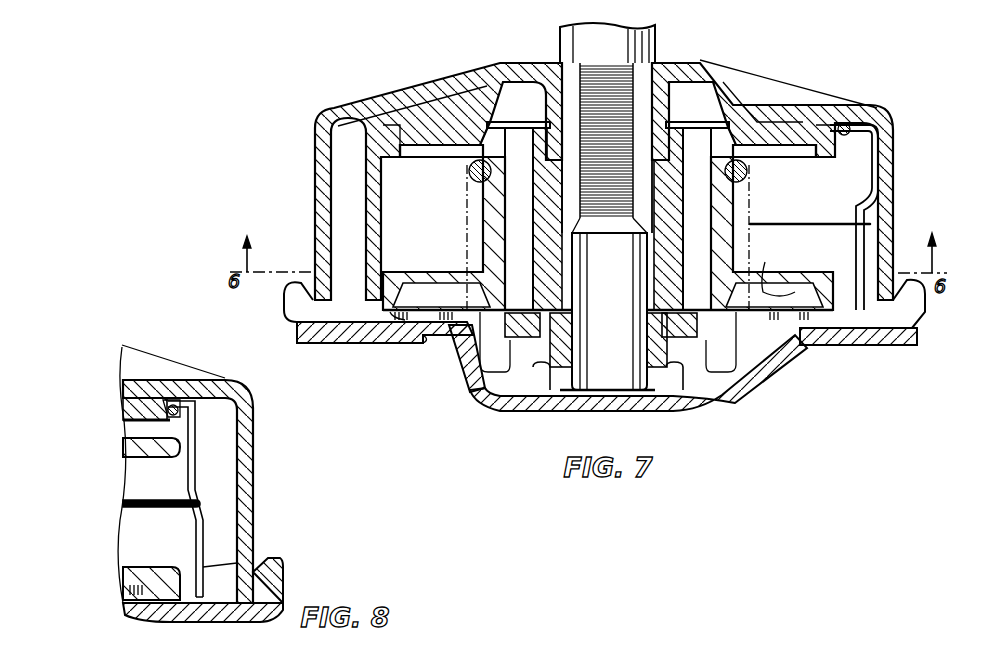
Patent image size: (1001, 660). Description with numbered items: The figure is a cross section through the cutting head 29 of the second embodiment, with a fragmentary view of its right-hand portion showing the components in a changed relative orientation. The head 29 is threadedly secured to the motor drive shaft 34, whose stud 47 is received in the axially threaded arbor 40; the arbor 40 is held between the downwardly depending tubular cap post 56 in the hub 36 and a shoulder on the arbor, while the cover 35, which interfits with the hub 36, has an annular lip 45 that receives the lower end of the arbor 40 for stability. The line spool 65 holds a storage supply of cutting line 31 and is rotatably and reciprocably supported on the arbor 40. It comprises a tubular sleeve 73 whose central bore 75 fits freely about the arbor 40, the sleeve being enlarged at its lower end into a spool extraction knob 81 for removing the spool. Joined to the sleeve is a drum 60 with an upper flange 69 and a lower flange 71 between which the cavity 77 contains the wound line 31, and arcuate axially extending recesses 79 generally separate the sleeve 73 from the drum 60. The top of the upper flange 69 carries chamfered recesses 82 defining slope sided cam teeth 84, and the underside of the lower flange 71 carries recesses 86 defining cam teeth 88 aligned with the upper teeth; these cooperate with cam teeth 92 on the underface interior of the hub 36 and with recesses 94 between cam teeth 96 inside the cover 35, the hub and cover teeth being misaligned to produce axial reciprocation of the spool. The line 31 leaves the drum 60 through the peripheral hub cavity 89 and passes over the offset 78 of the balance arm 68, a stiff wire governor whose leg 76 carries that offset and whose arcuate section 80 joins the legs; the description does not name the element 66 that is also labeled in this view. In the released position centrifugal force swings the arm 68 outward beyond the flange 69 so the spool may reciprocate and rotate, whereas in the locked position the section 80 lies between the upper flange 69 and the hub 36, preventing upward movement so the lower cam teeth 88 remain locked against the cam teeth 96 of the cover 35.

In FIG. 7, the head 29 is at (308, 150).
In FIG. 8, the head 29 is at (282, 513).
In FIG. 7, the cutting line 31 is at (468, 172).
In FIG. 8, the cutting line 31 is at (200, 507).
In FIG. 7, the motor drive shaft 34 is at (653, 43).
In FIG. 7, the cover 35 is at (363, 347).
In FIG. 8, the cover 35 is at (253, 613).
In FIG. 7, the hub 36 is at (477, 83).
In FIG. 8, the hub 36 is at (167, 383).
In FIG. 7, the arbor 40 is at (566, 248).
In FIG. 7, the annular lip 45 is at (690, 413).
In FIG. 7, the stud 47 is at (632, 55).
In FIG. 7, the tubular cap post 56 is at (553, 60).
In FIG. 7, the drum 60 is at (720, 220).
In FIG. 7, the line spool 65 is at (417, 262).
In FIG. 8, the line spool 65 is at (142, 463).
In FIG. 7, the sloping top wall 66 is at (691, 113).
In FIG. 7, the balance arm 68 is at (858, 173).
In FIG. 8, the balance arm 68 is at (230, 438).
In FIG. 7, the upper flange 69 is at (413, 158).
In FIG. 8, the upper flange 69 is at (150, 470).
In FIG. 7, the lower flange 71 is at (440, 272).
In FIG. 8, the lower flange 71 is at (143, 570).
In FIG. 7, the tubular sleeve 73 is at (580, 287).
In FIG. 7, the central bore 75 is at (645, 285).
In FIG. 7, the leg 76 is at (870, 155).
In FIG. 8, the leg 76 is at (203, 567).
In FIG. 7, the cavity 77 is at (407, 228).
In FIG. 7, the offset 78 is at (872, 203).
In FIG. 8, the offset 78 is at (228, 488).
In FIG. 7, the arcuate recesses 79 is at (523, 153).
In FIG. 7, the arcuate section 80 is at (832, 113).
In FIG. 8, the arcuate section 80 is at (182, 380).
In FIG. 7, the spool extraction knob 81 is at (743, 367).
In FIG. 7, the chamfered recesses 82 is at (457, 110).
In FIG. 8, the chamfered recesses 82 is at (123, 410).
In FIG. 8, the cam teeth 84 is at (127, 428).
In FIG. 7, the recesses 86 is at (483, 320).
In FIG. 8, the recesses 86 is at (150, 567).
In FIG. 7, the cam teeth 88 is at (413, 347).
In FIG. 7, the peripheral hub cavity 89 is at (830, 260).
In FIG. 7, the cam teeth 92 is at (420, 122).
In FIG. 8, the cam teeth 92 is at (123, 390).
In FIG. 7, the recesses 94 is at (447, 327).
In FIG. 8, the recesses 94 is at (127, 603).
In FIG. 7, the cam teeth 96 is at (440, 333).
In FIG. 8, the cam teeth 96 is at (128, 588).